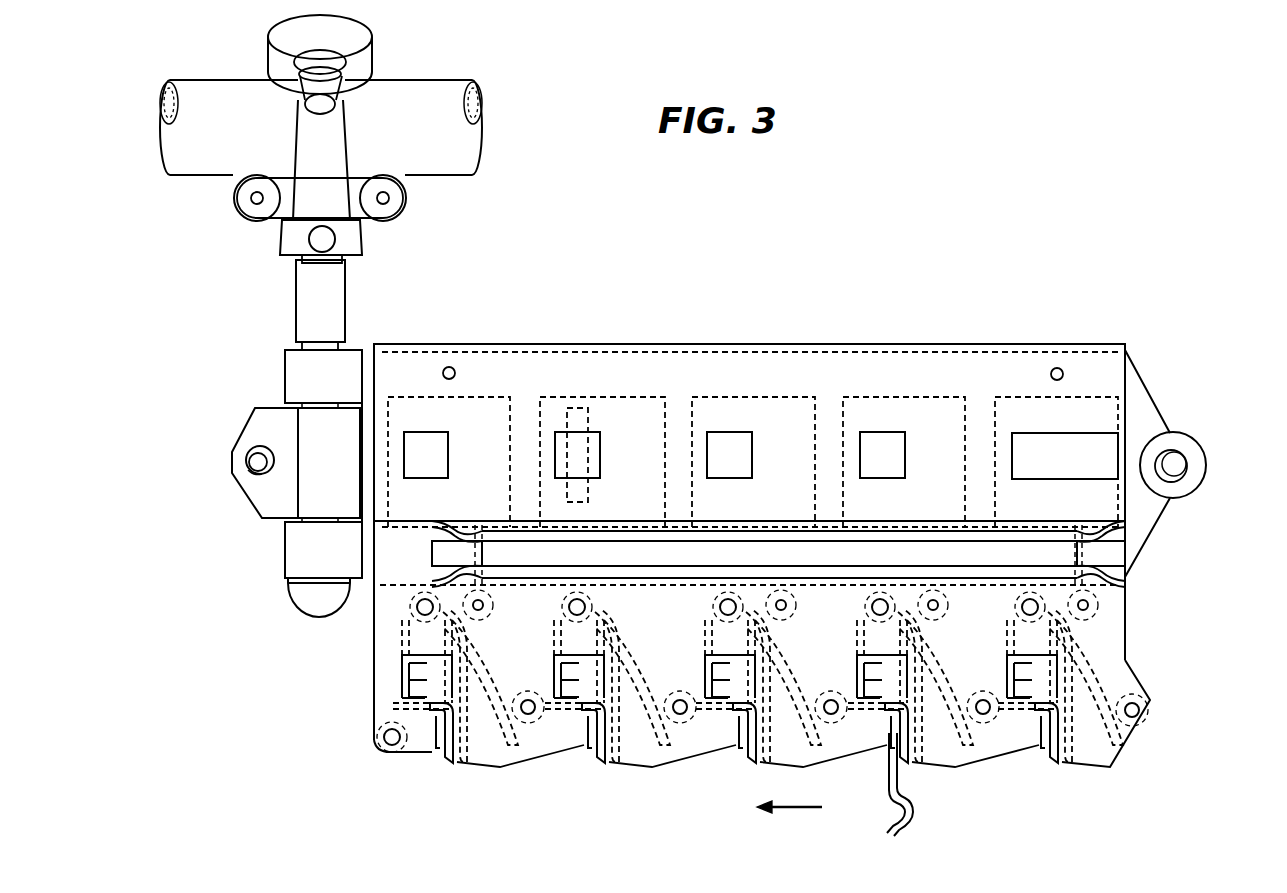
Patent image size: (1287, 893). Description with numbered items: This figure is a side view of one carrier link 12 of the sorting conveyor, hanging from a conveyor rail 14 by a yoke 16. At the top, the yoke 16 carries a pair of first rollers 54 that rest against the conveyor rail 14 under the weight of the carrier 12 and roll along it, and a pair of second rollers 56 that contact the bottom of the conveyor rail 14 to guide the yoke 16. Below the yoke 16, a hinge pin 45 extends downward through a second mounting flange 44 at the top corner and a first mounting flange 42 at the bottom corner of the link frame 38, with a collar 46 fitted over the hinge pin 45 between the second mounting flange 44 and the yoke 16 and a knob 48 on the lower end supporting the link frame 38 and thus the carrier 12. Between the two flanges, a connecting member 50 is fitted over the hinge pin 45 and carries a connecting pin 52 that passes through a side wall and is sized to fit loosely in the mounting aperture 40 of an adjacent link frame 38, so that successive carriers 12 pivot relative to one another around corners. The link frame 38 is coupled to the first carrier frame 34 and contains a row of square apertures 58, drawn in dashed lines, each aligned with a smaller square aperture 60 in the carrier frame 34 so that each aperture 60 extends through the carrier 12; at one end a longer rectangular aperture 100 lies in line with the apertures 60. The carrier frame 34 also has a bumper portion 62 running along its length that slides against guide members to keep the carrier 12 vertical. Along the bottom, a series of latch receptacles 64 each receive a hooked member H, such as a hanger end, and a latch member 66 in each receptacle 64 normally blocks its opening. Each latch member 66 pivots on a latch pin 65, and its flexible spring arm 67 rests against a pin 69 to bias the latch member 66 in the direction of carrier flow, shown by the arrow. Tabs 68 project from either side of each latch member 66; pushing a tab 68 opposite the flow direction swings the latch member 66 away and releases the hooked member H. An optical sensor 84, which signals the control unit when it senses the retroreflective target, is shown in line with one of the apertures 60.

The carrier link 12 is at (667, 338).
The conveyor rail 14 is at (427, 90).
The yoke 16 is at (332, 146).
The first carrier frame 34 is at (932, 360).
The link frame 38 is at (1157, 395).
The mounting aperture 40 is at (1178, 464).
The first mounting flange 42 is at (292, 558).
The second mounting flange 44 is at (292, 365).
The hinge pin 45 is at (297, 517).
The collar 46 is at (332, 300).
The knob 48 is at (307, 603).
The connecting member 50 is at (263, 407).
The connecting pin 52 is at (260, 458).
The first rollers 54 is at (288, 46).
The second rollers 56 is at (240, 192).
The square apertures 58 is at (470, 396).
The smaller square apertures 60 is at (444, 467).
The bumper portion 62 is at (642, 558).
The latch receptacles 64 is at (449, 757).
The latch pin 65 is at (727, 600).
The latch members 66 is at (432, 708).
The flexible spring arm 67 is at (487, 656).
The tabs 68 is at (402, 675).
The pin 69 is at (528, 691).
The optical sensor 84 is at (587, 462).
The rectangular aperture 100 is at (1038, 433).
The hooked member H is at (898, 775).